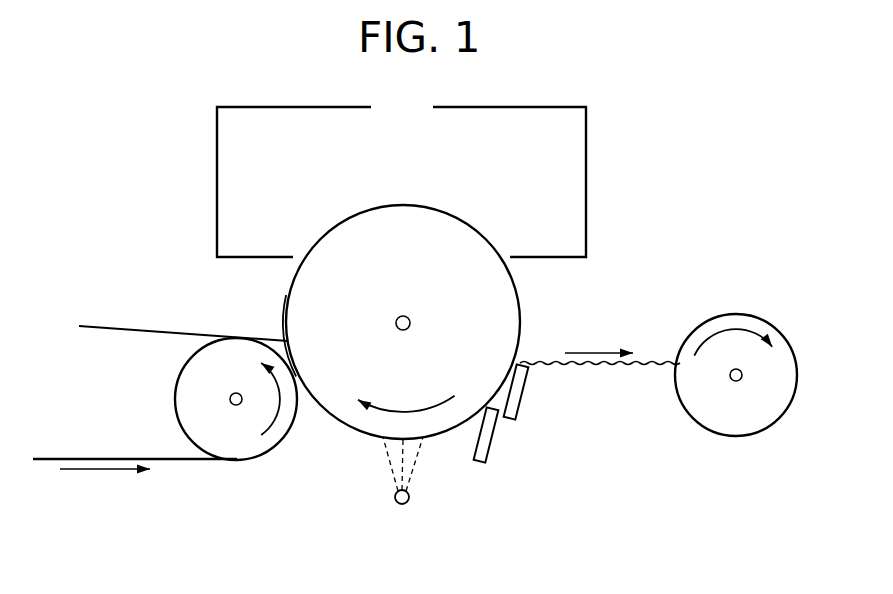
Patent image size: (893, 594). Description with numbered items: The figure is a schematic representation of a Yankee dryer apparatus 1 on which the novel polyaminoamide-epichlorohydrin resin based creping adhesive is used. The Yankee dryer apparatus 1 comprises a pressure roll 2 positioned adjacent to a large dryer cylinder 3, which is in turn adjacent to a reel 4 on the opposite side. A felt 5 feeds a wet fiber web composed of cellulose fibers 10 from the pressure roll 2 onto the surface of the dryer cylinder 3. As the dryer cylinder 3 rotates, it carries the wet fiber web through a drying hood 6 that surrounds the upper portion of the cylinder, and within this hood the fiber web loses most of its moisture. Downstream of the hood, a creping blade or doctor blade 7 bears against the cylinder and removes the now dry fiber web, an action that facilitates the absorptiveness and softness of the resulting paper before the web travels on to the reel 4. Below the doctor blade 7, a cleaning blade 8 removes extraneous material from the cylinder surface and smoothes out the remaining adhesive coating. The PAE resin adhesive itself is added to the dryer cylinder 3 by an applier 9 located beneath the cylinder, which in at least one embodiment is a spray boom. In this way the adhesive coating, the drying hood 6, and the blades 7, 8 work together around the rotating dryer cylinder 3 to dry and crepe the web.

The Yankee dryer apparatus 1 is at (187, 116).
The pressure roll 2 is at (236, 430).
The dryer cylinder 3 is at (356, 394).
The reel 4 is at (702, 372).
The felt 5 is at (151, 331).
The drying hood 6 is at (577, 138).
The creping blade or doctor blade 7 is at (521, 397).
The cleaning blade 8 is at (493, 438).
The applier 9 is at (412, 497).
The cellulose fibers 10 is at (286, 303).